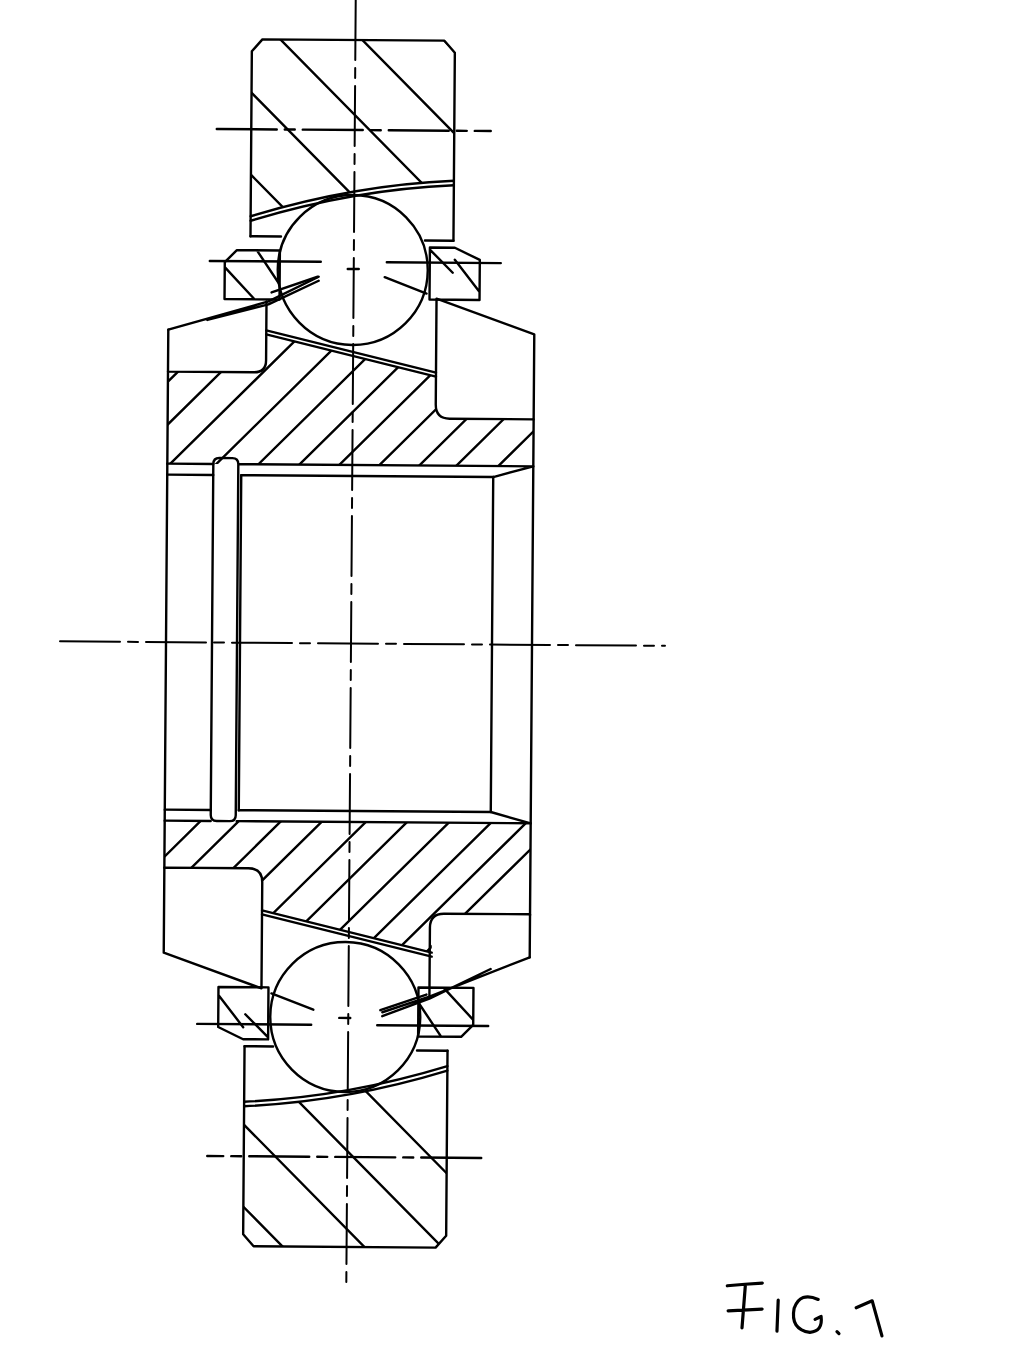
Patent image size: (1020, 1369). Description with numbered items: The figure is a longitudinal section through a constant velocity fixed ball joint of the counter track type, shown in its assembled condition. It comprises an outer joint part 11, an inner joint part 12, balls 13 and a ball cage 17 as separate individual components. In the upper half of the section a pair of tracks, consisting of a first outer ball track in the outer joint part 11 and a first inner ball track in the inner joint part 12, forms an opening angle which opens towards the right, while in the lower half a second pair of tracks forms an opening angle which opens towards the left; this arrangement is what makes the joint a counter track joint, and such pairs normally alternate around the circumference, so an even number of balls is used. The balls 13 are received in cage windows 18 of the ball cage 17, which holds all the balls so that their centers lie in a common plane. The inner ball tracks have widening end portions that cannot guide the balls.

The outer joint part 11 is at (456, 89).
The inner joint part 12 is at (535, 440).
The balls 13 is at (403, 237).
The ball cage 17 is at (480, 272).
The cage windows 18 is at (430, 1023).